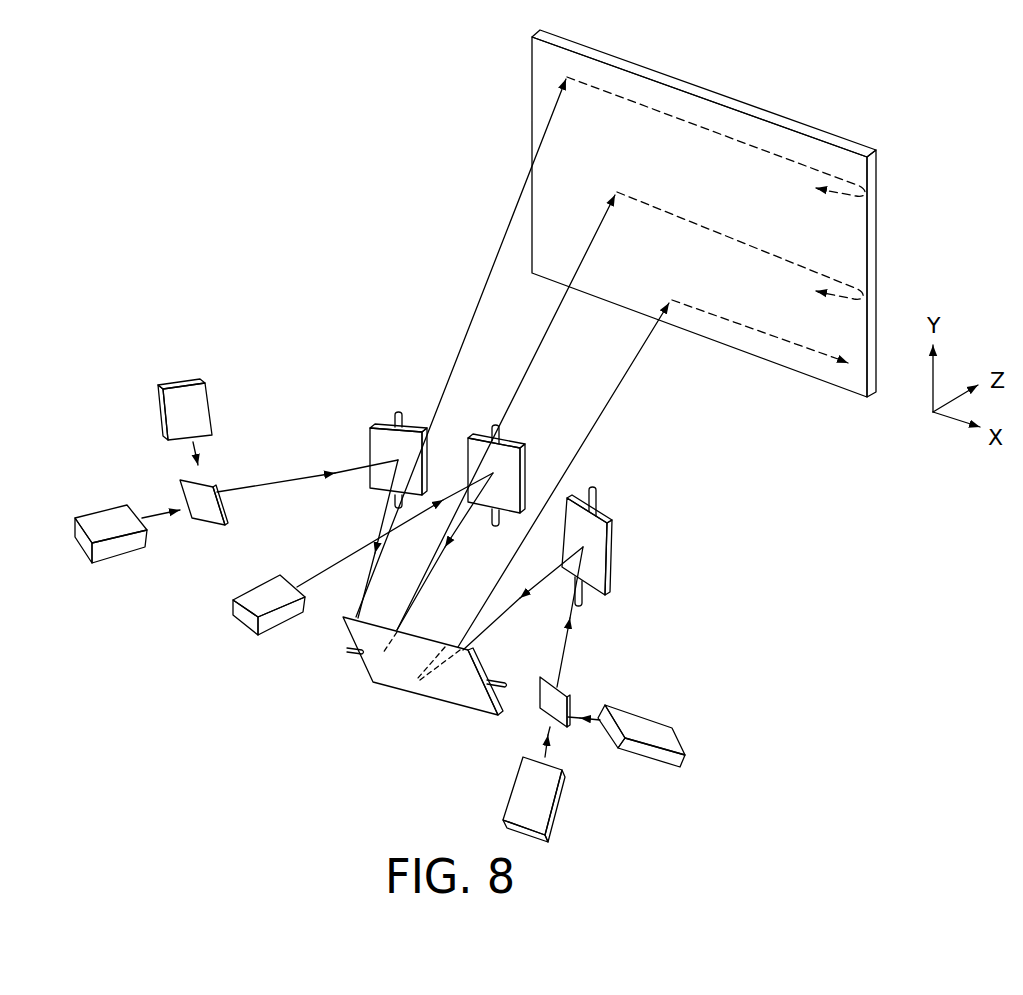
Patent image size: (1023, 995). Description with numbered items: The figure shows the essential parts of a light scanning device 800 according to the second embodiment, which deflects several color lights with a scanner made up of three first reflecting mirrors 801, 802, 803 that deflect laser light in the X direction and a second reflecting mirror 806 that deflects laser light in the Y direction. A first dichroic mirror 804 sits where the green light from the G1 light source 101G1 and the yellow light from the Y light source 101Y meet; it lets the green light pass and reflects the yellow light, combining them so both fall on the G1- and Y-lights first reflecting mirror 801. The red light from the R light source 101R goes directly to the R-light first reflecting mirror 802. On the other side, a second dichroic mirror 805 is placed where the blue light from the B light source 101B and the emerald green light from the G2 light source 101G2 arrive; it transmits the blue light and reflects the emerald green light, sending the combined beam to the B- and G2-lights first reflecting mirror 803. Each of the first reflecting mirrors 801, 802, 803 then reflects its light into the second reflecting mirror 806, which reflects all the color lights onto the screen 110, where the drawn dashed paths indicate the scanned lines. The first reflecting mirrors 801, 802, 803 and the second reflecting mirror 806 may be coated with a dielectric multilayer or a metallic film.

The screen 110 is at (806, 121).
The light scanning device 800 is at (354, 330).
The Y light source 101Y is at (177, 382).
The G1 light source 101G1 is at (110, 517).
The R light source 101R is at (240, 613).
The B light source 101B is at (542, 803).
The G2 light source 101G2 is at (662, 735).
The first dichroic mirror 804 is at (217, 495).
The second dichroic mirror 805 is at (565, 690).
The G1- and Y-lights first reflecting mirror 801 is at (380, 427).
The R-light first reflecting mirror 802 is at (520, 450).
The B- and G2-lights first reflecting mirror 803 is at (607, 523).
The second reflecting mirror 806 is at (390, 675).